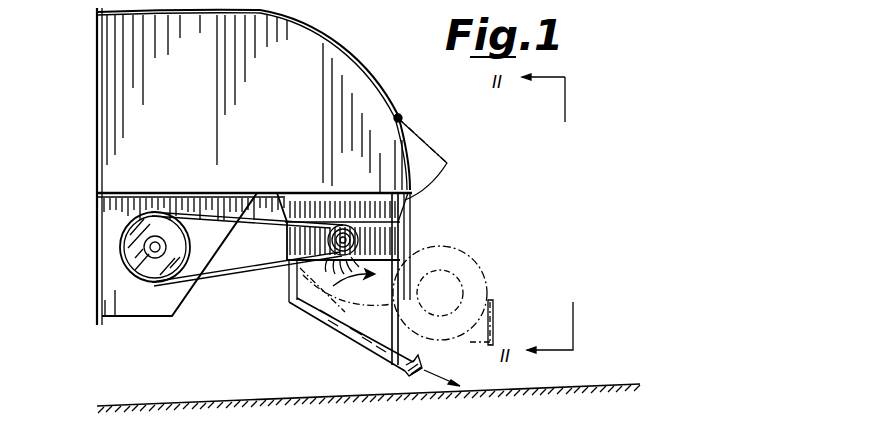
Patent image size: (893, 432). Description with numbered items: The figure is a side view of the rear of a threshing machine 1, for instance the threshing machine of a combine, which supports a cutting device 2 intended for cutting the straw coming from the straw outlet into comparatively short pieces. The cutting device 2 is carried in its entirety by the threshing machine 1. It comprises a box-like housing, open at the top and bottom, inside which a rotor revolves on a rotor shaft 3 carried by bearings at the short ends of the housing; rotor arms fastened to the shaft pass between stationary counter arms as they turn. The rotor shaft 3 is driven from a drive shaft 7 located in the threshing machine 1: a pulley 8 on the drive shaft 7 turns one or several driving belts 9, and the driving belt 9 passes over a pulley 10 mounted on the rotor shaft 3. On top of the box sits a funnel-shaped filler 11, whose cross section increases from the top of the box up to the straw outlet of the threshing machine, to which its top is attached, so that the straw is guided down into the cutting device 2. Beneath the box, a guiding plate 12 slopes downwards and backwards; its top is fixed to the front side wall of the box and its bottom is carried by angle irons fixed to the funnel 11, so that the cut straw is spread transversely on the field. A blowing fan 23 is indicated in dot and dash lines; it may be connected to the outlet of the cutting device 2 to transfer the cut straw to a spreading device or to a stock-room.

The threshing machine 1 is at (372, 90).
The cutting device 2 is at (404, 238).
The rotor shaft 3 is at (334, 255).
The drive shaft 7 is at (155, 258).
The pulley 8 is at (143, 262).
The driving belt 9 is at (241, 268).
The pulley 10 is at (328, 243).
The funnel-shaped filler 11 is at (408, 208).
The guiding plate 12 is at (353, 331).
The blowing fan 23 is at (472, 273).